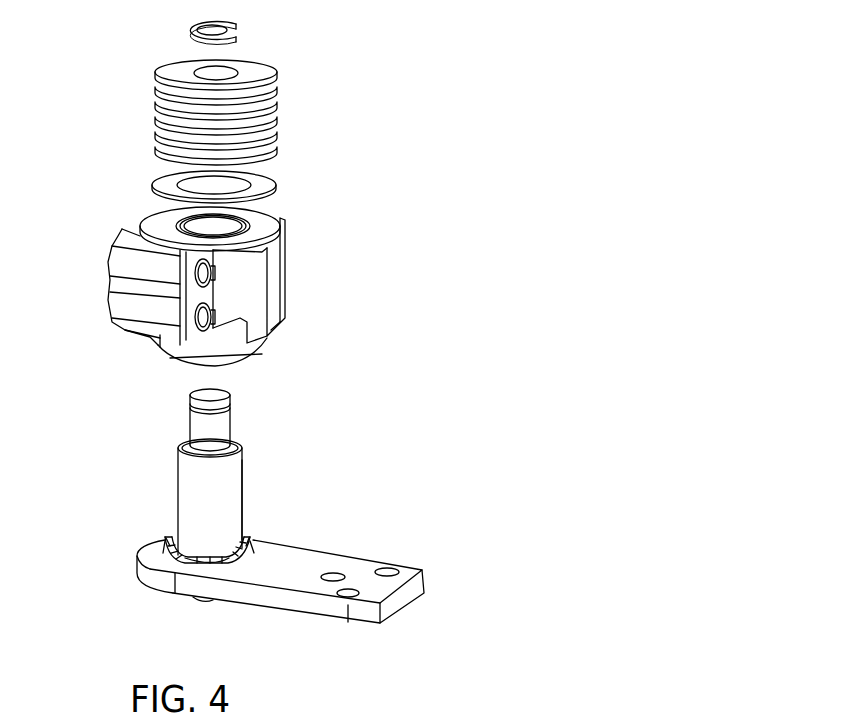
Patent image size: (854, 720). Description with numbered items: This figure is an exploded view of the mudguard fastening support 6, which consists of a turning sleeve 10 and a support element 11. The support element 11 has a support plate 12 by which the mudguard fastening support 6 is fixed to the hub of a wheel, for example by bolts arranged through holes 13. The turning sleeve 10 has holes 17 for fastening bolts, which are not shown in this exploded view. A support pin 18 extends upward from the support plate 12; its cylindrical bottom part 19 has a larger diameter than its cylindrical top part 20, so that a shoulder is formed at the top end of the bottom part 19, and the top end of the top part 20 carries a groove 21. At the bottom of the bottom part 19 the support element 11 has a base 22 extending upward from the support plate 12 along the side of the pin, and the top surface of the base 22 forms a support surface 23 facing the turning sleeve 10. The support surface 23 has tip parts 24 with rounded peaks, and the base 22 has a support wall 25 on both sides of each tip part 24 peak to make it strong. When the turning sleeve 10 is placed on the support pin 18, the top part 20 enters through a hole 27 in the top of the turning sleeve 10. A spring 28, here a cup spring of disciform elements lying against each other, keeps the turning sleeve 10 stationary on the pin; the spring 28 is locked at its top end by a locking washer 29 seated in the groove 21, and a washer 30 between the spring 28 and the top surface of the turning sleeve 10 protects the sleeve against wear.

The mudguard fastening support 6 is at (445, 333).
The turning sleeve 10 is at (208, 296).
The support element 11 is at (316, 494).
The support plate 12 is at (318, 563).
The holes 13 is at (383, 572).
The holes for the fastening bolts 17 is at (200, 268).
The support pin 18 is at (193, 478).
The bottom part of the support pin 19 is at (220, 505).
The top part of the support pin 20 is at (251, 405).
The groove 21 is at (231, 407).
The base 22 is at (199, 573).
The support surface 23 is at (177, 538).
The tip parts 24 is at (253, 542).
The support wall 25 is at (238, 548).
The hole 27 is at (200, 225).
The spring 28 is at (288, 60).
The locking washer 29 is at (233, 28).
The washer 30 is at (264, 181).